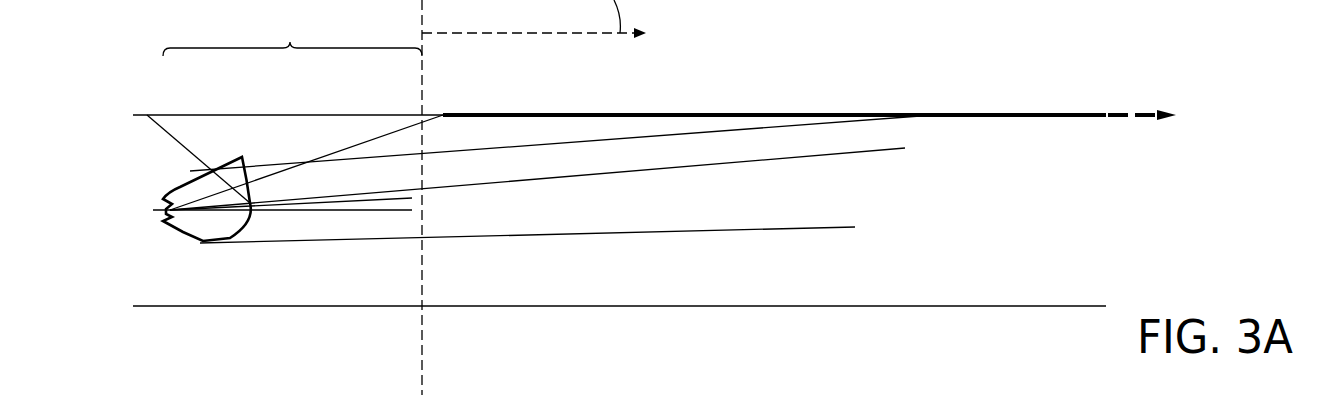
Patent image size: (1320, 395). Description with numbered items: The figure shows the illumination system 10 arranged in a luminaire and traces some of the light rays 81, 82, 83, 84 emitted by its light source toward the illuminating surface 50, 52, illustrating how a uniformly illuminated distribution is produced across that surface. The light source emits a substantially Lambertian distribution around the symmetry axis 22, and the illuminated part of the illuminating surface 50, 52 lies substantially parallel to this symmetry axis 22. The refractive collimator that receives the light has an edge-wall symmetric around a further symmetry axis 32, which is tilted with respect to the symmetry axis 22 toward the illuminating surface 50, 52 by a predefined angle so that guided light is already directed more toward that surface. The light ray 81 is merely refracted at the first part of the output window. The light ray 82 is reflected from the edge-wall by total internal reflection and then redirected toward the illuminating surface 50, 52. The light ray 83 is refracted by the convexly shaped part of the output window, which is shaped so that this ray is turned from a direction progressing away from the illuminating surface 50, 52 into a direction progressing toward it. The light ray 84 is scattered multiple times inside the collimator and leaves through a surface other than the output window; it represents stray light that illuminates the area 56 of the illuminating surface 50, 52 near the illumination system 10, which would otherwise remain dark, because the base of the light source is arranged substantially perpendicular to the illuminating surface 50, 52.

The illumination system 10 is at (217, 253).
The symmetry axis 22 is at (312, 213).
The further symmetry axis 32 is at (370, 203).
The illuminating surface 50 is at (809, 152).
The illuminating surface 52 is at (1022, 129).
The area of the illuminating surface near the illumination system 56 is at (292, 34).
The light ray 81 is at (355, 146).
The light ray 82 is at (540, 142).
The light ray 83 is at (475, 238).
The light ray 84 is at (168, 133).